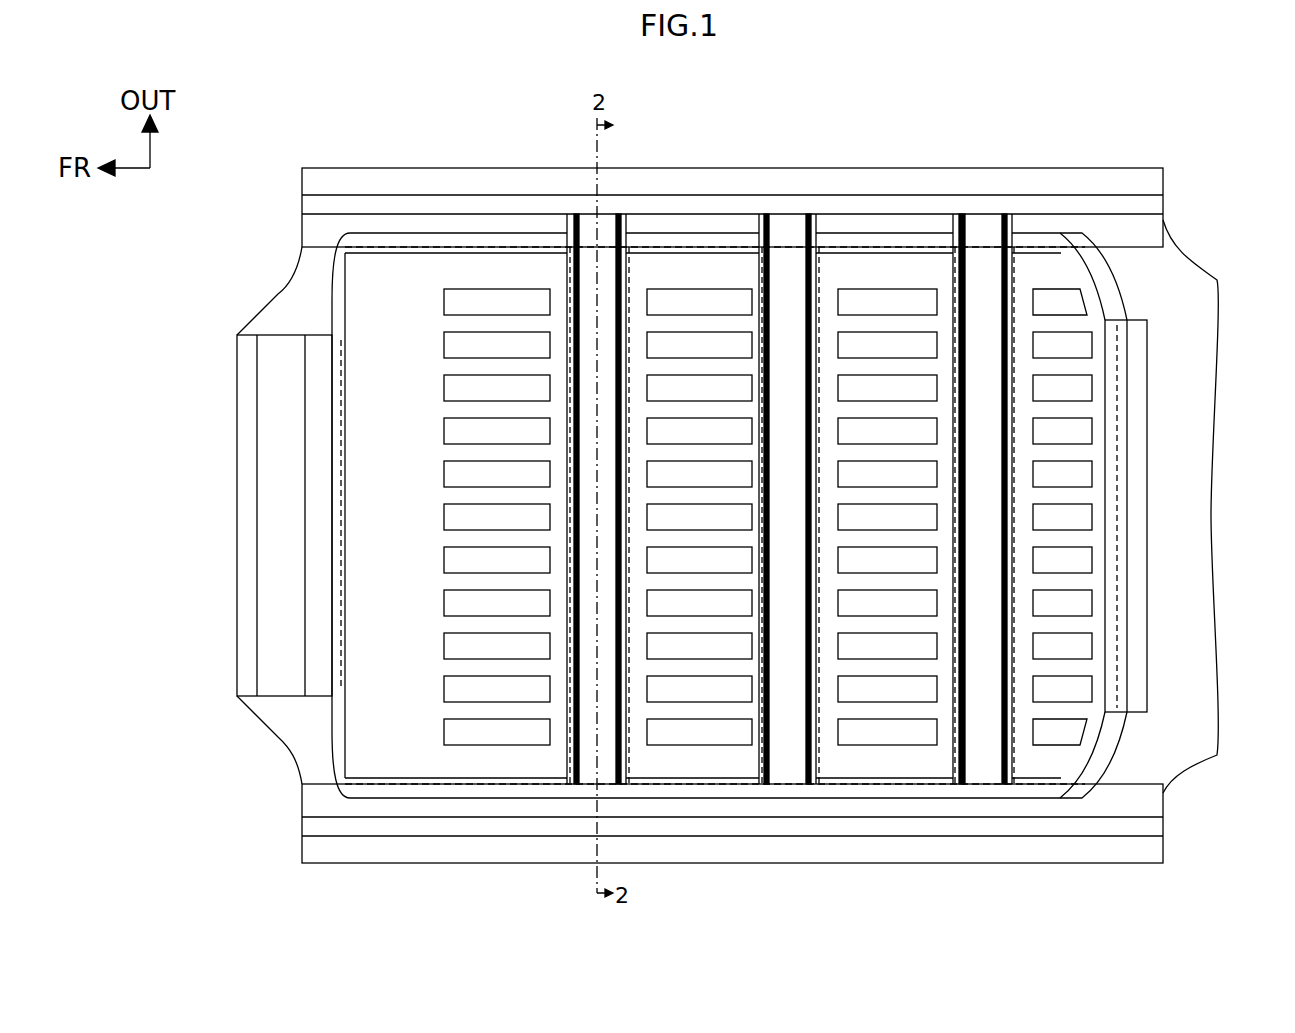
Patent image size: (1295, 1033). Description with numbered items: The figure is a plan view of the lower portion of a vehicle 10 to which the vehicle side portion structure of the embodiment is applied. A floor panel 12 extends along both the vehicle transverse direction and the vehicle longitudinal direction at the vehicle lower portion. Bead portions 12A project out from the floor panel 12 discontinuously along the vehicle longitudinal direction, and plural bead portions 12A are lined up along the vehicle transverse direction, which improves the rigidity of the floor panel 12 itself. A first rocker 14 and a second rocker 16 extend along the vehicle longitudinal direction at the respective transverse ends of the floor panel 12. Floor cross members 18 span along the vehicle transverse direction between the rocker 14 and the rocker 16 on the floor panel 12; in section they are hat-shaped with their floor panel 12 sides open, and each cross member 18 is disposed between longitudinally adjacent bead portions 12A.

The vehicle 10 is at (1213, 142).
The floor panel 12 is at (857, 234).
The bead portions 12A is at (460, 301).
The rocker (first rocker) 14 is at (503, 863).
The rocker (second rocker) 16 is at (533, 167).
The floor cross members 18 is at (605, 275).